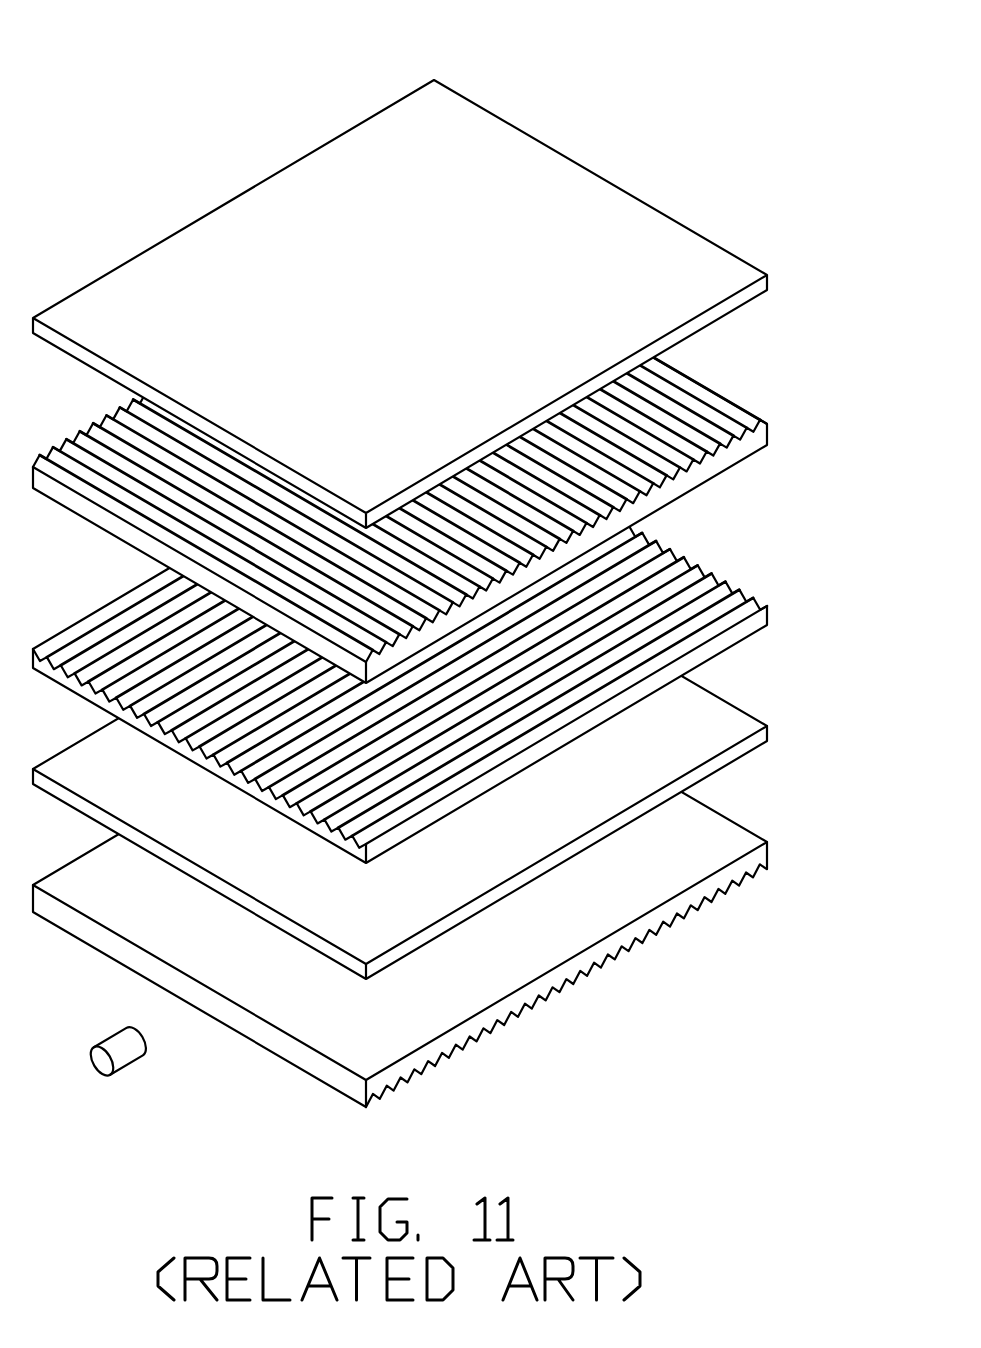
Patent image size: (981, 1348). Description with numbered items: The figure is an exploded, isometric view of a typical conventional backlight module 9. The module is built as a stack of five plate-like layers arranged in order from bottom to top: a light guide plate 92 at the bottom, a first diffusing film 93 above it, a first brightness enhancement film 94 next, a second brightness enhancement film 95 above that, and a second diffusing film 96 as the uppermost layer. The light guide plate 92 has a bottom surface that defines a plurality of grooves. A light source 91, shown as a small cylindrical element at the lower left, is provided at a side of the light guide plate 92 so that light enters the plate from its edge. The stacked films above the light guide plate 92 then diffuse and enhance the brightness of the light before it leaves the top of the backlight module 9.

The backlight module 9 is at (386, 46).
The light source 91 is at (130, 1055).
The light guide plate 92 is at (722, 850).
The first diffusing film 93 is at (715, 732).
The first brightness enhancement film 94 is at (757, 620).
The second brightness enhancement film 95 is at (725, 425).
The second diffusing film 96 is at (725, 279).